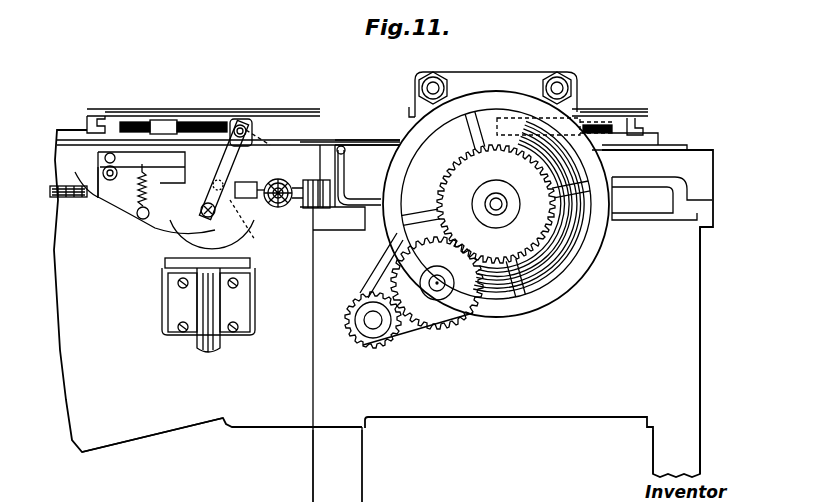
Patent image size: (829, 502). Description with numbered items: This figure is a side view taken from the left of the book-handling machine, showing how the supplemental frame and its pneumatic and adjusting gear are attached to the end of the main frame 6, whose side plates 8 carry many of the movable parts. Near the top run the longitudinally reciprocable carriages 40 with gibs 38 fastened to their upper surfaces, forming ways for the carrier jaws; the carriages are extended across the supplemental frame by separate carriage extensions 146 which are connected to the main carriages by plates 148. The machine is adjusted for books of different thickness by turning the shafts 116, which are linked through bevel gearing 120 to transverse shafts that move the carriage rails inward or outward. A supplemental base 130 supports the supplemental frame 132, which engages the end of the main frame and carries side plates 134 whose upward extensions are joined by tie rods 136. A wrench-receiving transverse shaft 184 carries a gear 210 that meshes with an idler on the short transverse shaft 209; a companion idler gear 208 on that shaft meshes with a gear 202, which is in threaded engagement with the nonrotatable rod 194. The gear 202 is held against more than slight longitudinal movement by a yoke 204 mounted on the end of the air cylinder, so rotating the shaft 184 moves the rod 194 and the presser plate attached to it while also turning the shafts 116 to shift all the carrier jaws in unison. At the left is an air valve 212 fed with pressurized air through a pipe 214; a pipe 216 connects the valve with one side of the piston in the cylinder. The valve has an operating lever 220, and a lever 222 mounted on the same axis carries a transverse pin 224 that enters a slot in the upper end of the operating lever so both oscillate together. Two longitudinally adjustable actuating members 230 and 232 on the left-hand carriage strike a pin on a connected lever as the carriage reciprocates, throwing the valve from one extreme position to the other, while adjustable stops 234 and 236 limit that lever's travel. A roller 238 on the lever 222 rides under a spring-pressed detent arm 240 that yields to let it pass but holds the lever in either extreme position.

The main frame 6 is at (282, 440).
The side plate 8 is at (140, 433).
The gib 38 is at (93, 122).
The carriage 40 is at (320, 138).
The shaft 116 is at (72, 198).
The bevel gearing 120 is at (293, 210).
The supplemental base 130 is at (353, 462).
The supplemental frame 132 is at (692, 313).
The side plate 134 is at (467, 414).
The tie rod 136 is at (433, 85).
The carriage extension 146 is at (365, 137).
The plate 148 is at (350, 127).
The transverse shaft 184 is at (371, 323).
The nonrotatable rod 194 is at (497, 198).
The gear 202 is at (496, 204).
The yoke 204 is at (582, 196).
The idler gear 208 is at (449, 331).
The short transverse shaft 209 is at (437, 281).
The gear 210 is at (388, 344).
The air valve 212 is at (172, 226).
The pipe 214 is at (222, 343).
The pipe 216 is at (350, 212).
The operating lever 220 is at (281, 182).
The lever 222 is at (246, 130).
The transverse pin 224 is at (240, 103).
The actuating member 230 is at (221, 120).
The actuating member 232 is at (503, 122).
The adjustable stop 234 is at (240, 205).
The adjustable stop 236 is at (170, 238).
The roller 238 is at (212, 236).
The spring-pressed detent arm 240 is at (130, 174).